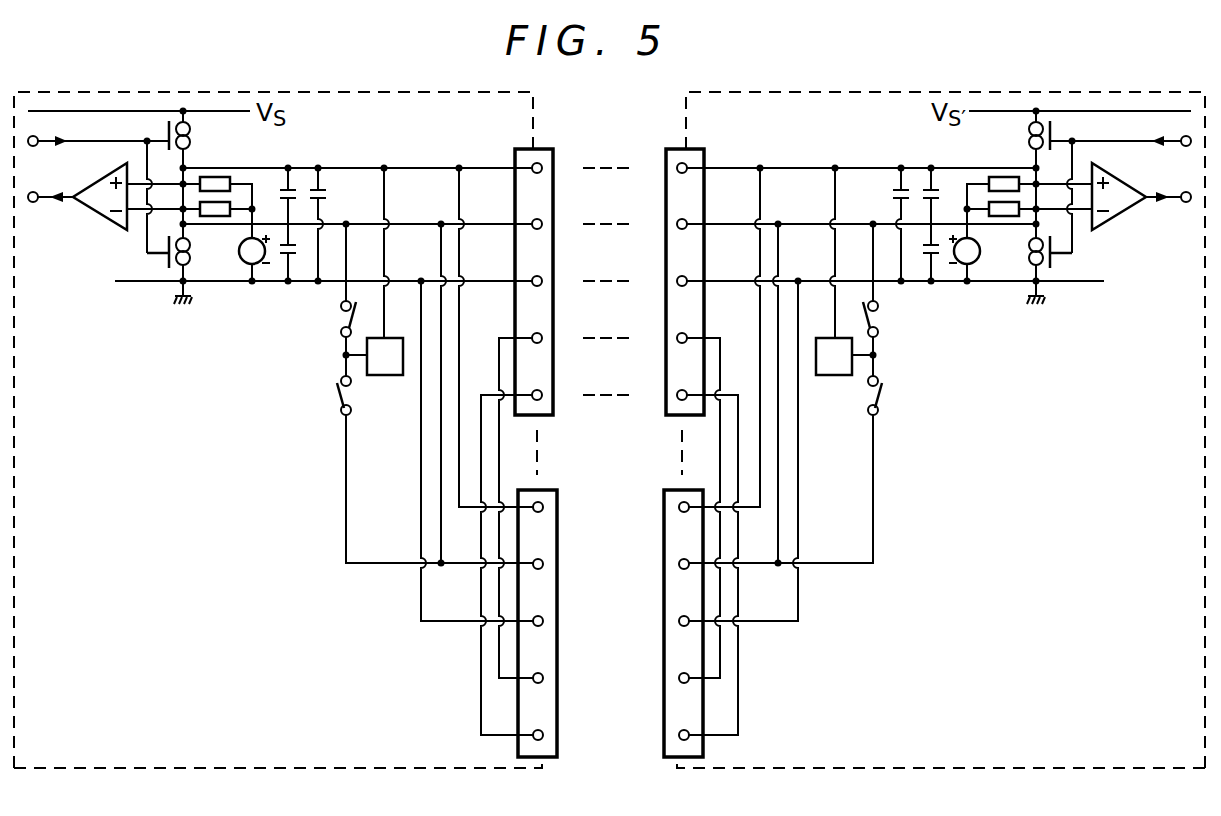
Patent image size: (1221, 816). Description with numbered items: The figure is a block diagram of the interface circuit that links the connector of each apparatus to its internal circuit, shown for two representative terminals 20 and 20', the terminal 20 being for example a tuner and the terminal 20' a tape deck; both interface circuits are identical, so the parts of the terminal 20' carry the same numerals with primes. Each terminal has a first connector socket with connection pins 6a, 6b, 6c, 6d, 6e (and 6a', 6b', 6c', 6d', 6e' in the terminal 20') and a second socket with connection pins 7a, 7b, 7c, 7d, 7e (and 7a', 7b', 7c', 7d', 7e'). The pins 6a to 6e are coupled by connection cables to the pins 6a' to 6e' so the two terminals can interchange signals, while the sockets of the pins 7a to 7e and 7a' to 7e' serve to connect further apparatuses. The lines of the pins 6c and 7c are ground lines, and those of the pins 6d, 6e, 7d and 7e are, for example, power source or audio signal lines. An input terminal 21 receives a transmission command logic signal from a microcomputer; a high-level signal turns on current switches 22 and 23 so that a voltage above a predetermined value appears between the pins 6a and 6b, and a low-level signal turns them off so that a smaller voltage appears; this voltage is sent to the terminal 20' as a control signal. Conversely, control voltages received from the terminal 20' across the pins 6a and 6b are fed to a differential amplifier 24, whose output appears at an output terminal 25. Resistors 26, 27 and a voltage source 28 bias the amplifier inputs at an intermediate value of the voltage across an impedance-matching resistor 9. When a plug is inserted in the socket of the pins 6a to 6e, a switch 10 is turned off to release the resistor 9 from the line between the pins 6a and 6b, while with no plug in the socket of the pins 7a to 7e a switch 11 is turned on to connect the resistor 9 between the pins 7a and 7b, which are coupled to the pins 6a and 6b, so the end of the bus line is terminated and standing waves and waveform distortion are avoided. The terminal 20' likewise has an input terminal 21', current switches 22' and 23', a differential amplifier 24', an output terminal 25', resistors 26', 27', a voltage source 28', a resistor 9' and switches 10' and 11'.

The terminal 20 is at (278, 409).
The terminal 20' is at (941, 410).
The input terminal 21 is at (95, 161).
The input terminal 21' is at (1120, 164).
The current switch 22 is at (205, 134).
The current switch 22' is at (1015, 140).
The current switch 23 is at (188, 292).
The current switch 23' is at (1081, 270).
The differential amplifier 24 is at (100, 213).
The differential amplifier 24' is at (1119, 188).
The output terminal 25 is at (48, 219).
The output terminal 25' is at (1169, 227).
The resistor 26 is at (242, 166).
The resistor 26' is at (949, 163).
The resistor 27 is at (217, 232).
The resistor 27' is at (1011, 237).
The voltage source 28 is at (261, 291).
The voltage source 28' is at (976, 289).
The impedance-matching resistor 9 is at (385, 385).
The impedance-matching resistor 9' is at (832, 386).
The switch 10 is at (329, 323).
The switch 10' is at (903, 322).
The switch 11 is at (315, 401).
The switch 11' is at (908, 404).
The connection pin 6a is at (566, 188).
The connection pin 6b is at (567, 244).
The connection pin 6c is at (566, 301).
The connection pin 6d is at (567, 358).
The connection pin 6e is at (567, 415).
The connection pin 6a' is at (653, 188).
The connection pin 6b' is at (652, 244).
The connection pin 6c' is at (653, 301).
The connection pin 6d' is at (652, 358).
The connection pin 6e' is at (653, 415).
The connection pin 7a is at (568, 522).
The connection pin 7b is at (569, 579).
The connection pin 7c is at (568, 636).
The connection pin 7d is at (569, 693).
The connection pin 7e is at (569, 750).
The connection pin 7a' is at (654, 522).
The connection pin 7b' is at (654, 579).
The connection pin 7c' is at (655, 636).
The connection pin 7d' is at (654, 693).
The connection pin 7e' is at (654, 750).